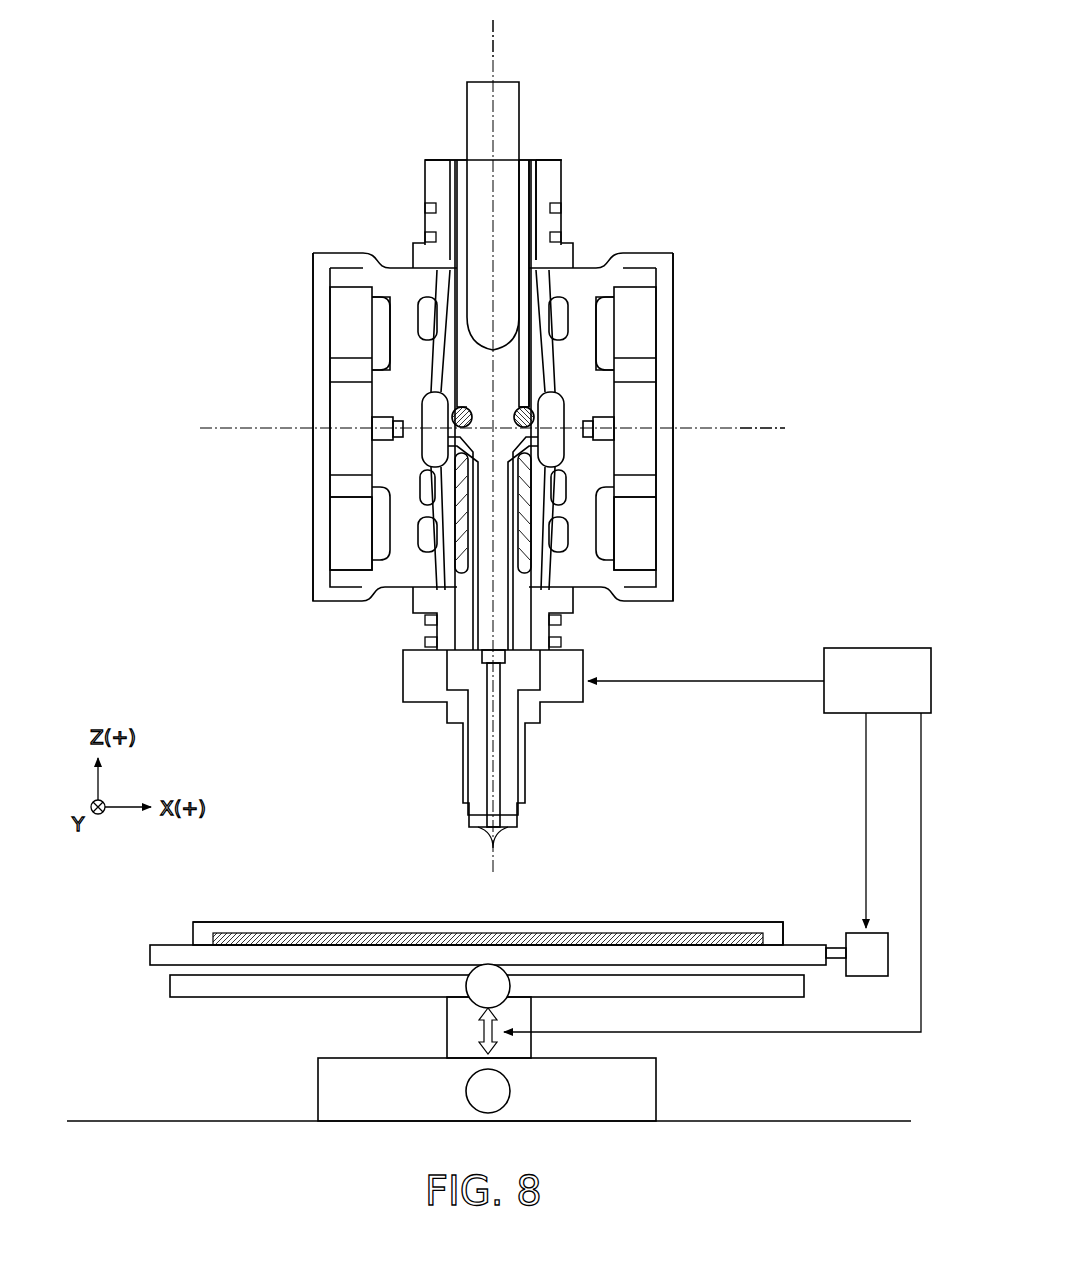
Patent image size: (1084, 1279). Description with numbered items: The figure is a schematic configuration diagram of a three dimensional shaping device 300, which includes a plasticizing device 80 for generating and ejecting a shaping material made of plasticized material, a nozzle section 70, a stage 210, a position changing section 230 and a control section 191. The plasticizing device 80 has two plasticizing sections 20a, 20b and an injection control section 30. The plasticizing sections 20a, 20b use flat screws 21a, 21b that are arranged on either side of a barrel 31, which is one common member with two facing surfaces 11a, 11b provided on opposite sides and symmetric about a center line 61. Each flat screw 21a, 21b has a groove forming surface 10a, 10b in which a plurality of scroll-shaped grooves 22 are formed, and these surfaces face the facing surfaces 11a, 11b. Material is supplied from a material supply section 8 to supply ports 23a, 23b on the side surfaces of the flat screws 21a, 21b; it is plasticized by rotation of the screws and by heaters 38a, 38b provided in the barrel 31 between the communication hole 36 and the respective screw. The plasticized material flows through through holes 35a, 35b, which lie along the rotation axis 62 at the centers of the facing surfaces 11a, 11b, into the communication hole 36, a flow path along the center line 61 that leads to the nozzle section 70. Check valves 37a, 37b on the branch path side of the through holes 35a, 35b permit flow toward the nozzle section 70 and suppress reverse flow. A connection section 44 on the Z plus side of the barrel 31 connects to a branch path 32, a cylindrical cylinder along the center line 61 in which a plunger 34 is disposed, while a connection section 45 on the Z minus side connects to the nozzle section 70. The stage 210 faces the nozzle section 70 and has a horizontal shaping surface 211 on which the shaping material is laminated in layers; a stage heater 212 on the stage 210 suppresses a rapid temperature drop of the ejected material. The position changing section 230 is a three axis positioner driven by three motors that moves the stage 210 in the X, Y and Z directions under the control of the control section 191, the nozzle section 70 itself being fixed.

The material supply section 8 is at (368, 199).
The groove forming surface 10a is at (742, 523).
The groove forming surface 10b is at (247, 523).
The facing surface 11a is at (560, 562).
The facing surface 11b is at (428, 562).
The plasticizing section 20a is at (702, 241).
The plasticizing section 20b is at (288, 240).
The flat screw 21a is at (642, 256).
The flat screw 21b is at (345, 256).
The grooves 22 is at (395, 528).
The supply ports 23a is at (584, 263).
The supply ports 23b is at (402, 263).
The injection control section 30 is at (572, 134).
The barrel 31 is at (540, 285).
The branch path 32 is at (530, 245).
The plunger 34 is at (480, 330).
The through hole 35a is at (554, 452).
The through hole 35b is at (432, 452).
The communication hole 36 is at (558, 641).
The check valve 37a is at (534, 413).
The check valve 37b is at (452, 413).
The heater 38a is at (530, 470).
The heater 38b is at (456, 470).
The connection section 44 is at (424, 157).
The connection section 45 is at (428, 641).
The center line 61 is at (497, 42).
The rotation axis 62 is at (763, 426).
The nozzle section 70 is at (598, 720).
The plasticizing device 80 is at (703, 154).
The control section 191 is at (866, 648).
The stage 210 is at (193, 924).
The shaping surface 211 is at (216, 920).
The stage heater 212 is at (213, 938).
The position changing section 230 is at (238, 1020).
The three dimensional shaping device 300 is at (768, 92).